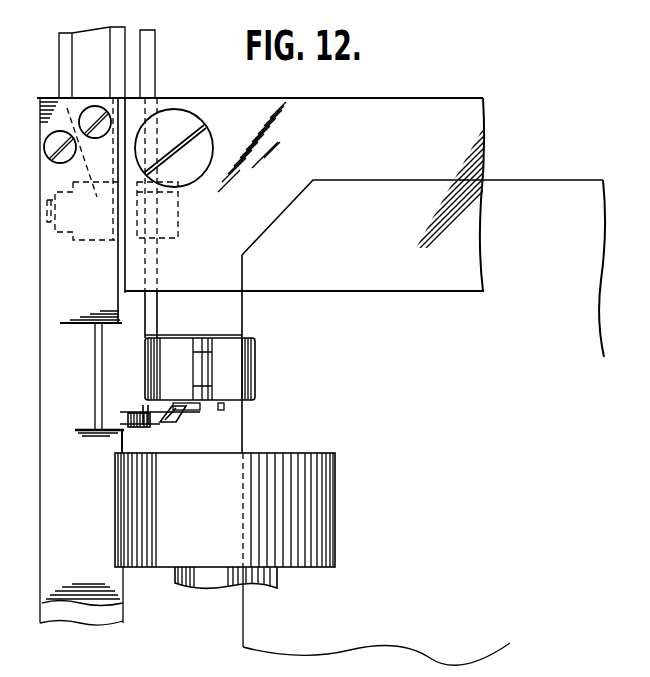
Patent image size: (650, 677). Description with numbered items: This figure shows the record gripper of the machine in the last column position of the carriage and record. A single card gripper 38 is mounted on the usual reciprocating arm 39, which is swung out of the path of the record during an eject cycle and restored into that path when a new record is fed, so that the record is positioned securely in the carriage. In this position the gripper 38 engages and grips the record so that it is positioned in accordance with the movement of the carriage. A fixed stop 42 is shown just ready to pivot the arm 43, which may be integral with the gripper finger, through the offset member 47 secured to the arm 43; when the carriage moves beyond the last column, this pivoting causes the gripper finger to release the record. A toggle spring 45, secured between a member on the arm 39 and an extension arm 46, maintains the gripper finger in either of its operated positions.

The card gripper 38 is at (165, 361).
The reciprocating arm 39 is at (157, 312).
The fixed stop 42 is at (133, 418).
The arm 43 is at (200, 410).
The toggle spring 45 is at (143, 413).
The extension arm 46 is at (143, 436).
The offset member 47 is at (176, 423).